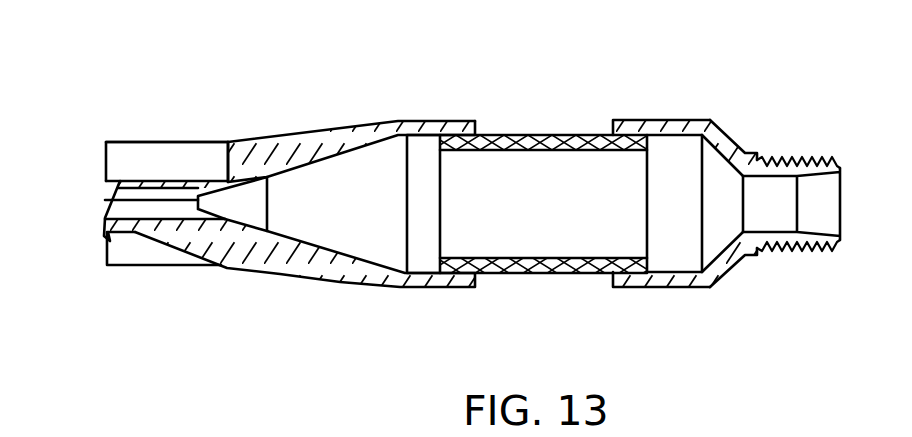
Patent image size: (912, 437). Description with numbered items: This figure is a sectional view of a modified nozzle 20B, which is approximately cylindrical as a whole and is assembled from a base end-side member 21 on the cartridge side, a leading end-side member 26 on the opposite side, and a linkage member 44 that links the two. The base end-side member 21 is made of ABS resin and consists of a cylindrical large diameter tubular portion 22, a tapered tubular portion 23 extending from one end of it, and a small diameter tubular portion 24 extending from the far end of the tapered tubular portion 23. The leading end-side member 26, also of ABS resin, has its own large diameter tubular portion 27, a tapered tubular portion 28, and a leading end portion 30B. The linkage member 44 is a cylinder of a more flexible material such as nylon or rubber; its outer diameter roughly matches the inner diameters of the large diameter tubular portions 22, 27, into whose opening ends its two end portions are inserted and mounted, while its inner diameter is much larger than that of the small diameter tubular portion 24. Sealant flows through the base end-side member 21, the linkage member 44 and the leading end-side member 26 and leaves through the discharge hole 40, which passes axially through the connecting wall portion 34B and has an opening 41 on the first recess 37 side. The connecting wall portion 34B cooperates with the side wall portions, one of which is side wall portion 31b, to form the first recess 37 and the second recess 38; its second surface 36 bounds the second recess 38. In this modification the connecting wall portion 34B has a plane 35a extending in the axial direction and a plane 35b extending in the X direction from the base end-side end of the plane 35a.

The nozzle 20B is at (609, 78).
The base end-side member 21 is at (772, 106).
The large diameter tubular portion 22 is at (662, 133).
The tapered tubular portion 23 is at (722, 142).
The small diameter tubular portion 24 is at (808, 160).
The leading end-side member 26 is at (372, 109).
The large diameter tubular portion 27 is at (441, 133).
The tapered tubular portion 28 is at (326, 138).
The leading end portion 30B is at (96, 111).
The side wall portion 31b is at (116, 160).
The connecting wall portion 34B is at (107, 229).
The plane 35a is at (180, 179).
The plane 35b is at (226, 165).
The second surface 36 is at (193, 253).
The first recess 37 is at (140, 155).
The second recess 38 is at (155, 262).
The discharge hole 40 is at (111, 191).
The opening 41 is at (105, 213).
The linkage member 44 is at (545, 135).